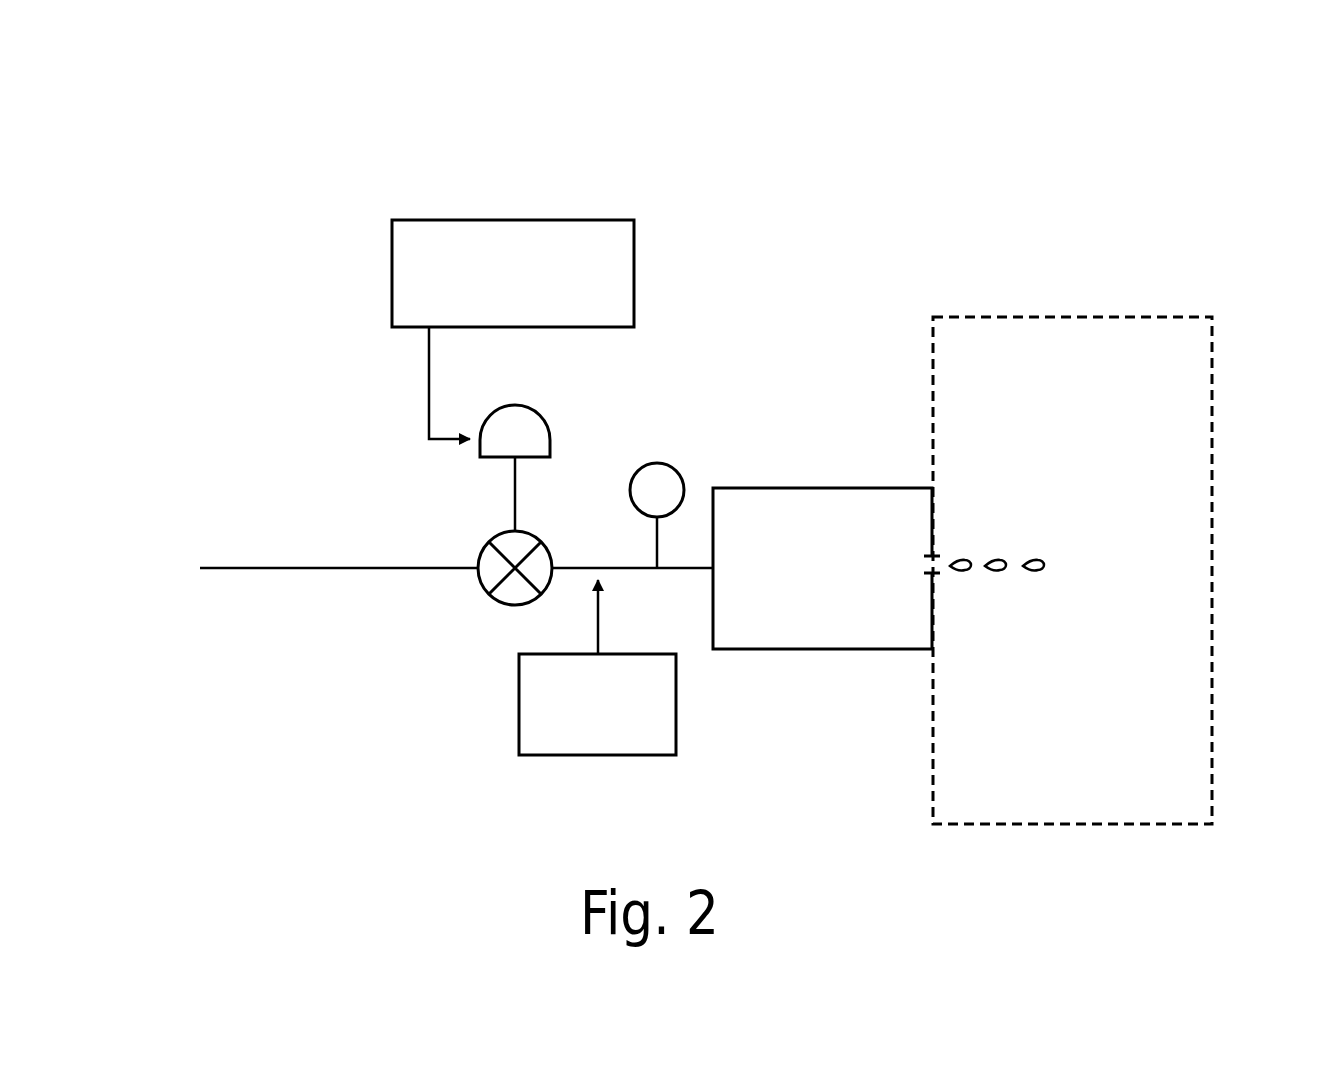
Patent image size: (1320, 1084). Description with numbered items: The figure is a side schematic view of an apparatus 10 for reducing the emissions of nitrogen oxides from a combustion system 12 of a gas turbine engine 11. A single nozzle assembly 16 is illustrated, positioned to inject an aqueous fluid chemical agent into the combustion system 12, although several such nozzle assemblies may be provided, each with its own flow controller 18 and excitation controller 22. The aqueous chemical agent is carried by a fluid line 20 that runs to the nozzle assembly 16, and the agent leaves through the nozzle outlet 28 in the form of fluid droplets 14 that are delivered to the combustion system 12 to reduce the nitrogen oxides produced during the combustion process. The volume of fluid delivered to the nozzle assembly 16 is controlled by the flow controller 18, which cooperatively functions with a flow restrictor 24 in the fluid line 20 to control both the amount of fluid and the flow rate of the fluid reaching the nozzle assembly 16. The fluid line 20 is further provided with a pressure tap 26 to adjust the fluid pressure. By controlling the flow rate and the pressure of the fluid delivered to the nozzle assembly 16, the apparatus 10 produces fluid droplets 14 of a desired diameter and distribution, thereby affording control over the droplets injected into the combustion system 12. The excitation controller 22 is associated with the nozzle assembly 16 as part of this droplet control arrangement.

The apparatus 10 is at (878, 165).
The gas turbine engine 11 is at (1172, 313).
The combustion system 12 is at (1084, 803).
The droplets 14 is at (945, 570).
The nozzle assembly 16 is at (788, 486).
The flow controller 18 is at (598, 218).
The fluid line 20 is at (268, 565).
The excitation controller 22 is at (674, 727).
The flow restrictor 24 is at (527, 530).
The pressure tap 26 is at (672, 465).
The orifice 28 is at (931, 617).